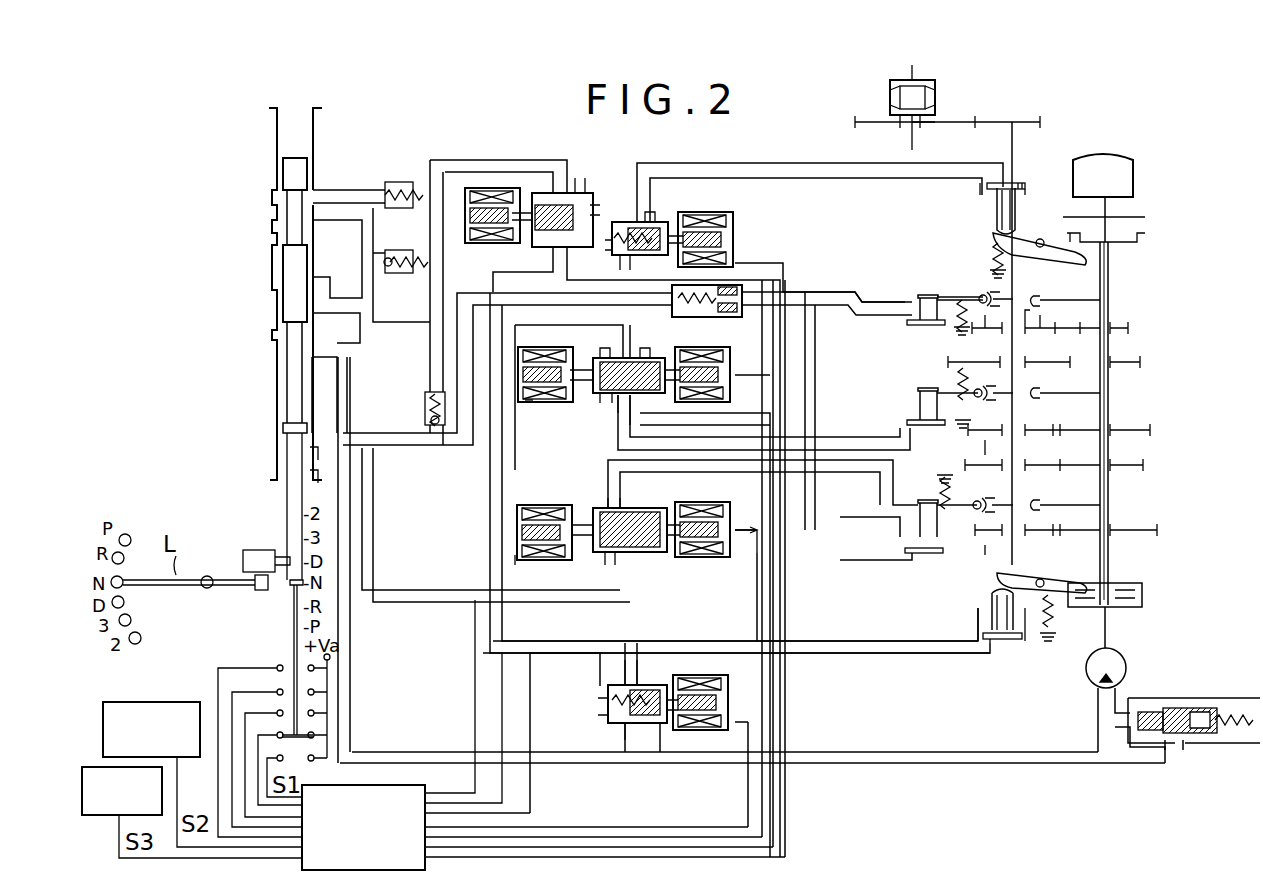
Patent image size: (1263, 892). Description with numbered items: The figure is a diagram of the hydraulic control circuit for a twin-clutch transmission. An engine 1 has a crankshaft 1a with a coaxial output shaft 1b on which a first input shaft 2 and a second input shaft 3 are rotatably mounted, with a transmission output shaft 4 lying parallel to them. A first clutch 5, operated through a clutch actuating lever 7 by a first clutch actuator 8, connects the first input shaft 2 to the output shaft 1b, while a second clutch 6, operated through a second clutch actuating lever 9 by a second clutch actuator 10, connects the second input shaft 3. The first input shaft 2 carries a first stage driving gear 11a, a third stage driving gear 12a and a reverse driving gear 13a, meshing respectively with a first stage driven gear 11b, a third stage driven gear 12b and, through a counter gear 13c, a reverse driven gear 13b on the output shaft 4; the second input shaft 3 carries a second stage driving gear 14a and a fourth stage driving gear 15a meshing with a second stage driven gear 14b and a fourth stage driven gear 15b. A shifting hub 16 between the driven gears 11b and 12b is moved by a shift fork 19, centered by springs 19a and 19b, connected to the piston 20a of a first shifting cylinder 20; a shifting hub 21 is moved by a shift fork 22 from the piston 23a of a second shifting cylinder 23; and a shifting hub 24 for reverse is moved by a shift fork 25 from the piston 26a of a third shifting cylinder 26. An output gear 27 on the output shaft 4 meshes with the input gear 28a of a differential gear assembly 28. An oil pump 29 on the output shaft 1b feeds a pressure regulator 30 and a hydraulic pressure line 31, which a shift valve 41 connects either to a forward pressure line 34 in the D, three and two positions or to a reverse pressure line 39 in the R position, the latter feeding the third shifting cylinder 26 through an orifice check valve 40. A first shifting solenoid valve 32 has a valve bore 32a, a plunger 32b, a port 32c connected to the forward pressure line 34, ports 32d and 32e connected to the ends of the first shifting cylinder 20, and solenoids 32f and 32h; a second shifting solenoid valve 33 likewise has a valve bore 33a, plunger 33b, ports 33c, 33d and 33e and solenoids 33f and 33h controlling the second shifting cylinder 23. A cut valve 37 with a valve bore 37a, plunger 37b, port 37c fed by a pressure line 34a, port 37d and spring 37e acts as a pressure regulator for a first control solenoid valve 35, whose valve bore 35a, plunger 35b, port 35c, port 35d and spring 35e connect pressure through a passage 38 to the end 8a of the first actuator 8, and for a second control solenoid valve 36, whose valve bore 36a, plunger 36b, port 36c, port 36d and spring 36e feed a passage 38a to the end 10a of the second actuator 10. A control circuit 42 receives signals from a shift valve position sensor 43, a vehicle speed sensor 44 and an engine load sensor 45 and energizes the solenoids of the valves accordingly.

The engine 1 is at (1140, 170).
The crankshaft 1a is at (1108, 205).
The output shaft 1b is at (1110, 290).
The first input shaft 2 is at (1112, 390).
The second input shaft 3 is at (1112, 505).
The transmission output shaft 4 is at (1018, 138).
The first clutch 5 is at (1155, 229).
The second clutch 6 is at (1153, 592).
The clutch actuating lever 7 is at (1067, 256).
The first clutch actuator 8 is at (1028, 177).
The one end of first actuator 8a is at (990, 183).
The second clutch actuating lever 9 is at (998, 580).
The second clutch actuator 10 is at (1011, 650).
The one end of second actuator 10a is at (985, 660).
The first stage driving gear 11a is at (1125, 360).
The first stage driven gear 11b is at (1045, 395).
The third stage driving gear 12a is at (1132, 428).
The third stage driven gear 12b is at (1040, 440).
The reverse driving gear 13a is at (1122, 328).
The reverse driven gear 13b is at (1048, 338).
The counter gear 13c is at (1066, 302).
The second stage driving gear 14a is at (1140, 465).
The second stage driven gear 14b is at (1040, 500).
The fourth stage driving gear 15a is at (1140, 530).
The fourth stage driven gear 15b is at (1050, 535).
The shifting hub 16 is at (1040, 415).
The shift fork 19 is at (938, 375).
The spring 19a is at (978, 338).
The spring 19b is at (905, 423).
The first shifting cylinder 20 is at (915, 454).
The piston 20a is at (915, 392).
The shifting hub 21 is at (982, 545).
The shift fork 22 is at (955, 505).
The second shifting cylinder 23 is at (888, 549).
The piston 23a is at (900, 512).
The shifting hub 24 is at (995, 275).
The shift fork 25 is at (958, 295).
The third shifting cylinder 26 is at (899, 327).
The piston 26a is at (928, 326).
The output gear 27 is at (1032, 120).
The differential gear assembly 28 is at (879, 96).
The input gear 28a is at (930, 125).
The oil pump 29 is at (1125, 662).
The pressure regulator 30 is at (1175, 705).
The hydraulic pressure line 31 is at (1022, 765).
The first shifting solenoid valve 32 is at (725, 348).
The valve bore 32a is at (615, 358).
The plunger 32b is at (549, 432).
The port 32c is at (640, 360).
The port 32d is at (635, 425).
The port 32e is at (605, 395).
The solenoid 32f is at (540, 402).
The solenoid 32h is at (728, 395).
The second shifting solenoid valve 33 is at (500, 531).
The valve bore 33a is at (608, 555).
The plunger 33b is at (590, 515).
The port 33c is at (632, 552).
The port 33d is at (612, 495).
The port 33e is at (665, 552).
The solenoid 33f is at (525, 562).
The solenoid 33h is at (737, 560).
The forward pressure line 34 is at (367, 363).
The pressure line 34a is at (425, 295).
The first control solenoid valve 35 is at (633, 215).
The valve bore 35a is at (660, 226).
The plunger 35b is at (705, 226).
The port 35c is at (620, 270).
The port 35d is at (650, 212).
The spring 35e is at (628, 228).
The second control solenoid valve 36 is at (594, 690).
The valve bore 36a is at (660, 723).
The plunger 36b is at (625, 723).
The port 36c is at (630, 665).
The port 36d is at (645, 685).
The spring 36e is at (600, 718).
The cut valve 37 is at (505, 185).
The valve bore 37a is at (578, 178).
The plunger 37b is at (402, 213).
The port 37c is at (548, 193).
The port 37d is at (548, 232).
The spring 37e is at (606, 183).
The passage 38 is at (813, 178).
The passage 38a is at (920, 640).
The reverse pressure line 39 is at (818, 292).
The orifice check valve 40 is at (740, 285).
The shift valve 41 is at (290, 312).
The control circuit 42 is at (543, 735).
The shift valve position sensor 43 is at (276, 655).
The vehicle speed sensor 44 is at (175, 700).
The engine load sensor 45 is at (108, 818).